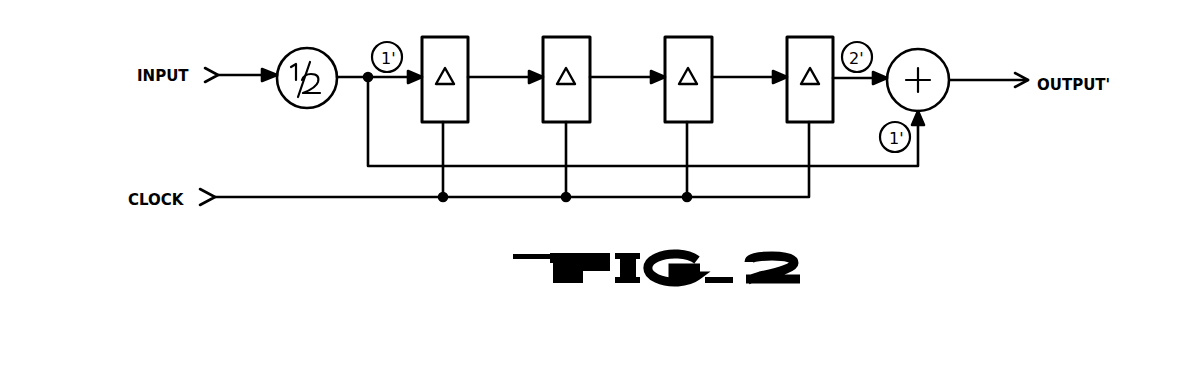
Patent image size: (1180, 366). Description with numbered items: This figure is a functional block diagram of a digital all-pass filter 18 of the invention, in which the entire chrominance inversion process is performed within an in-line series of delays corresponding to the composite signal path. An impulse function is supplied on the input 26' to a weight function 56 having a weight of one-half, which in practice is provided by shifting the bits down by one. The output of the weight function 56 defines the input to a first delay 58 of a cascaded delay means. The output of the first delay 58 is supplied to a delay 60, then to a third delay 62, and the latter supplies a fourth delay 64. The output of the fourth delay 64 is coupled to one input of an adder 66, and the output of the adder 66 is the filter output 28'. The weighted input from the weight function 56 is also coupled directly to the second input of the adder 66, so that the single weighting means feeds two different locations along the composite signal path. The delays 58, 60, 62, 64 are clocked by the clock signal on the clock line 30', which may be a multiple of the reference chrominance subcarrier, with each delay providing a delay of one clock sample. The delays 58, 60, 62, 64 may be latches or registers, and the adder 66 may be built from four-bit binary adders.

The input 26' is at (247, 52).
The weight function 56 is at (318, 50).
The first delay 58 is at (450, 37).
The delay 60 is at (560, 37).
The third delay 62 is at (682, 37).
The fourth delay 64 is at (803, 37).
The adder 66 is at (930, 52).
The output 28' is at (989, 61).
The clock line 30' is at (512, 161).
The digital all-pass filter 18 is at (945, 155).